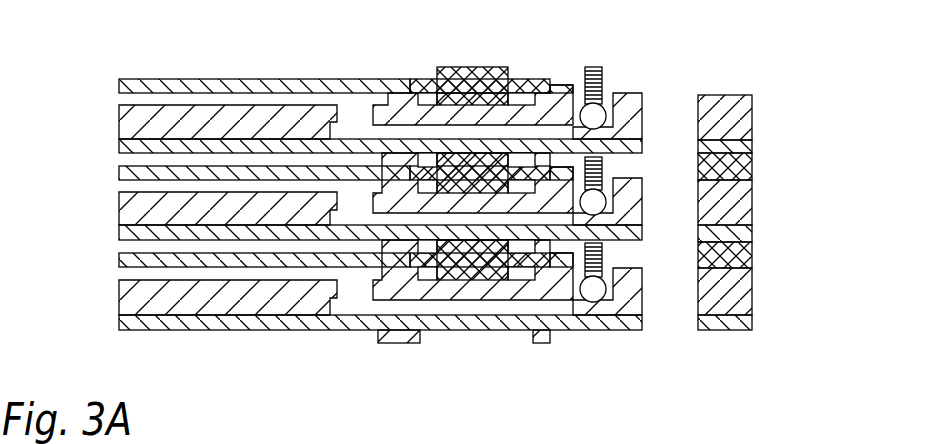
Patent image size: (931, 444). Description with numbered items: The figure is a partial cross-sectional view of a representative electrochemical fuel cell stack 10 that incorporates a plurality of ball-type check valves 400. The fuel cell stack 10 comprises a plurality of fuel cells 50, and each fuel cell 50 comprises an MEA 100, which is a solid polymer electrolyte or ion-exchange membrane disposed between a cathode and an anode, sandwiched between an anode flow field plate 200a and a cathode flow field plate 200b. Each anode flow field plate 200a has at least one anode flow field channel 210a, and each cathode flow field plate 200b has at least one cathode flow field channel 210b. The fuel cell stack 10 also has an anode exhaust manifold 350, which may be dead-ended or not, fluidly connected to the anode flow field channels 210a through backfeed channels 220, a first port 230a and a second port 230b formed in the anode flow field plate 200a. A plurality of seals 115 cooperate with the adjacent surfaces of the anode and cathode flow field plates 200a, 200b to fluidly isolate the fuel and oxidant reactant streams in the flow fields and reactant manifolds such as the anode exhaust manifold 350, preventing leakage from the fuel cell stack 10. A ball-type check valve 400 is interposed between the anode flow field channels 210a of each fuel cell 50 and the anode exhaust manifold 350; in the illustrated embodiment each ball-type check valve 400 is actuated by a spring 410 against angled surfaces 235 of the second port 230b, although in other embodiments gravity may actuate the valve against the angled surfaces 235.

The electrochemical fuel cell stack 10 is at (745, 38).
The fuel cell 50 is at (758, 142).
The MEA 100 is at (119, 173).
The seal 115 is at (473, 67).
The anode flow field plate 200a is at (113, 95).
The cathode flow field plate 200b is at (115, 223).
The anode flow field channel 210a is at (205, 97).
The cathode flow field channel 210b is at (200, 247).
The backfeed channel 220 is at (393, 127).
The first port 230a is at (355, 115).
The second port 230b is at (613, 93).
The angled surface 235 is at (642, 152).
The anode exhaust manifold 350 is at (665, 315).
The ball-type check valve 400 is at (577, 113).
The spring 410 is at (560, 285).